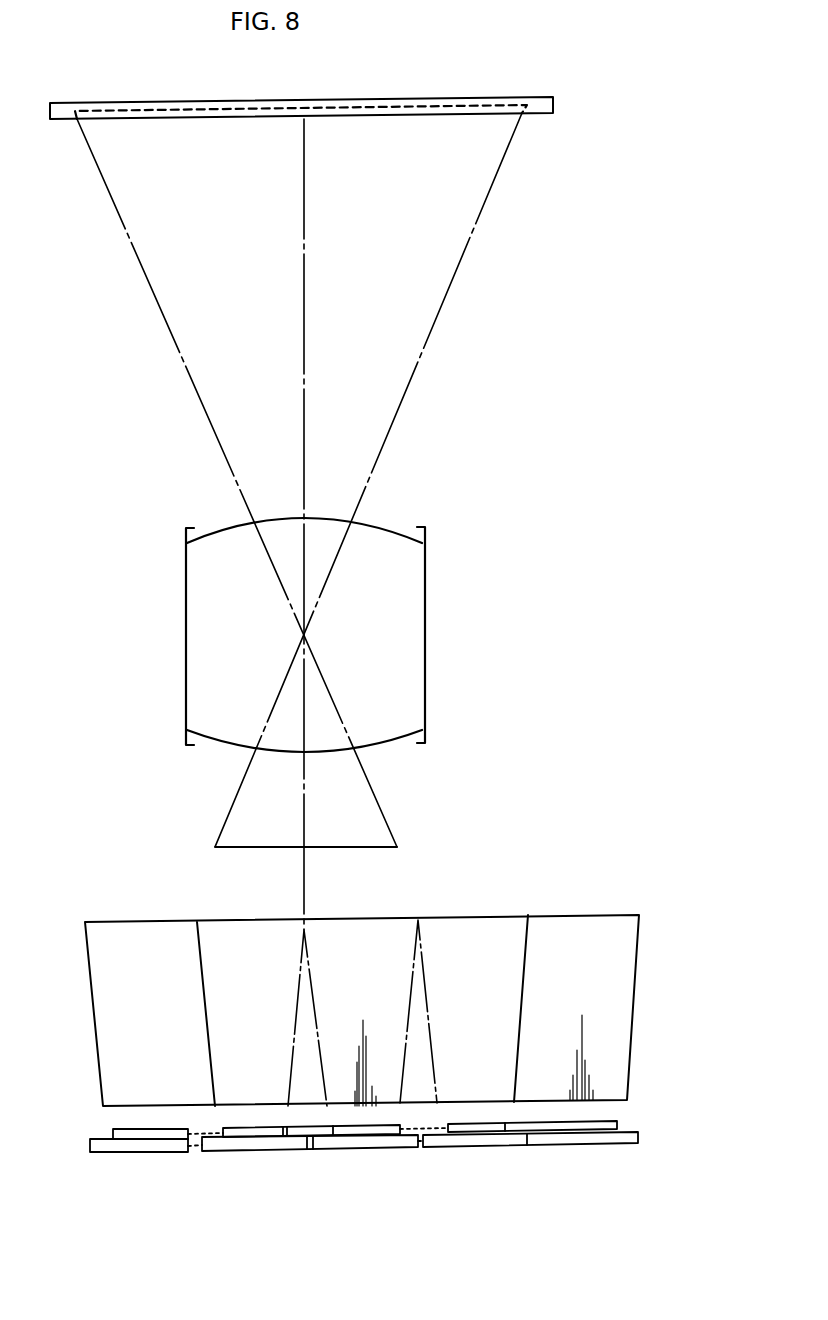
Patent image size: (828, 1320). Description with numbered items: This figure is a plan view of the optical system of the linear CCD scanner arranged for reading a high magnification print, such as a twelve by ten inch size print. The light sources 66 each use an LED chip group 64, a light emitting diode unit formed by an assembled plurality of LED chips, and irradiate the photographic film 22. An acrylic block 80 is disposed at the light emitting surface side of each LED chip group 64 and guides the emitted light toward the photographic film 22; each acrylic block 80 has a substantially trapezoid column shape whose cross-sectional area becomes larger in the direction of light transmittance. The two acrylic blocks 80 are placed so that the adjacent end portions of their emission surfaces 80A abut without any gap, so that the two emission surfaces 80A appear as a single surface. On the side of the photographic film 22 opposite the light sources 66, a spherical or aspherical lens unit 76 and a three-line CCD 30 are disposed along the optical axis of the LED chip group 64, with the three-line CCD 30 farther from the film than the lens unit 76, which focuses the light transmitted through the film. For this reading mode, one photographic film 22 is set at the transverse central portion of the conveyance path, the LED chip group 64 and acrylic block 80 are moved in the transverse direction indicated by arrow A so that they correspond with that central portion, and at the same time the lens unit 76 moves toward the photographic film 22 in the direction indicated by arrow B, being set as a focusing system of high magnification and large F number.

The three-line CCD 30 is at (487, 97).
The lens unit 76 is at (427, 620).
The photographic film 22 is at (375, 845).
The acrylic block 80 is at (197, 952).
The emission surface 80A is at (233, 920).
The LED chip group 64 is at (223, 1130).
The light source 66 is at (205, 1155).
The transverse direction arrow A is at (250, 1193).
The lens movement direction arrow B is at (575, 312).